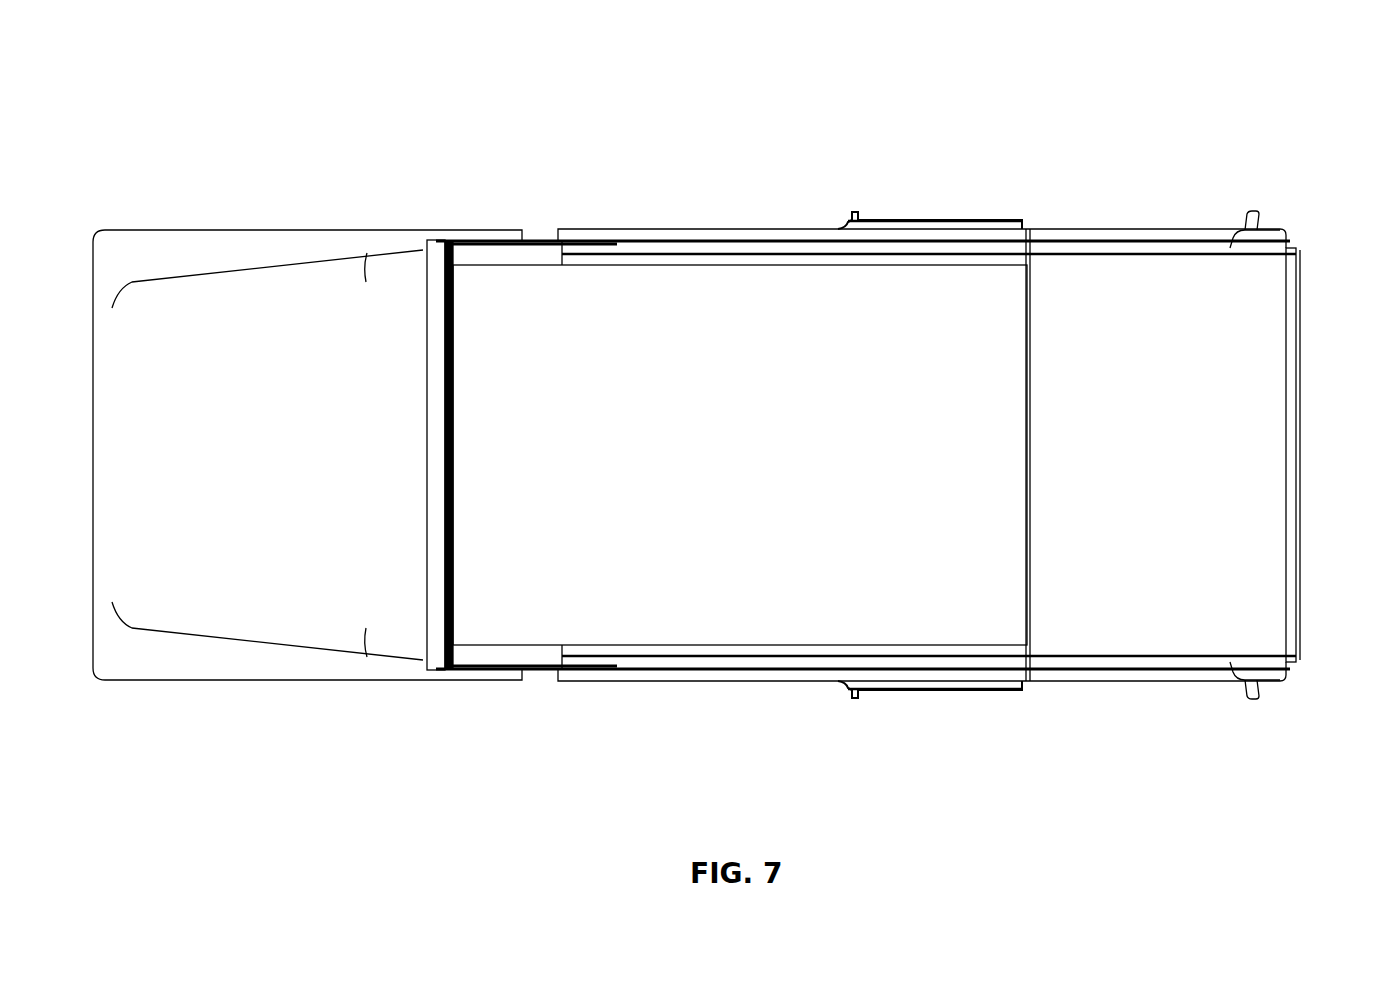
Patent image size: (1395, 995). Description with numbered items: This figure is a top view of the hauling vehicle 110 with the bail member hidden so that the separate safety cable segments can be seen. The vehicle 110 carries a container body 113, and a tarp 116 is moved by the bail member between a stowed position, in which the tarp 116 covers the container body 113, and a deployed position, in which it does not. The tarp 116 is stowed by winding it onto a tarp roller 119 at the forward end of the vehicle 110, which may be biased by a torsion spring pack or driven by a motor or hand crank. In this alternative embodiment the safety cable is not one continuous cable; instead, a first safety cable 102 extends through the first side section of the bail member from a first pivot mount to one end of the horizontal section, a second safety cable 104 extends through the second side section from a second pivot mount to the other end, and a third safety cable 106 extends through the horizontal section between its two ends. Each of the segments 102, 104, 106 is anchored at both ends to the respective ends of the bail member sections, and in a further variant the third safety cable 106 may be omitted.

The vehicle 110 is at (1250, 84).
The tarp roller 119 is at (438, 238).
The tarp 116 is at (745, 325).
The first safety cable 102 is at (968, 218).
The second safety cable 104 is at (935, 692).
The third safety cable 106 is at (1026, 518).
The container body 113 is at (1113, 670).